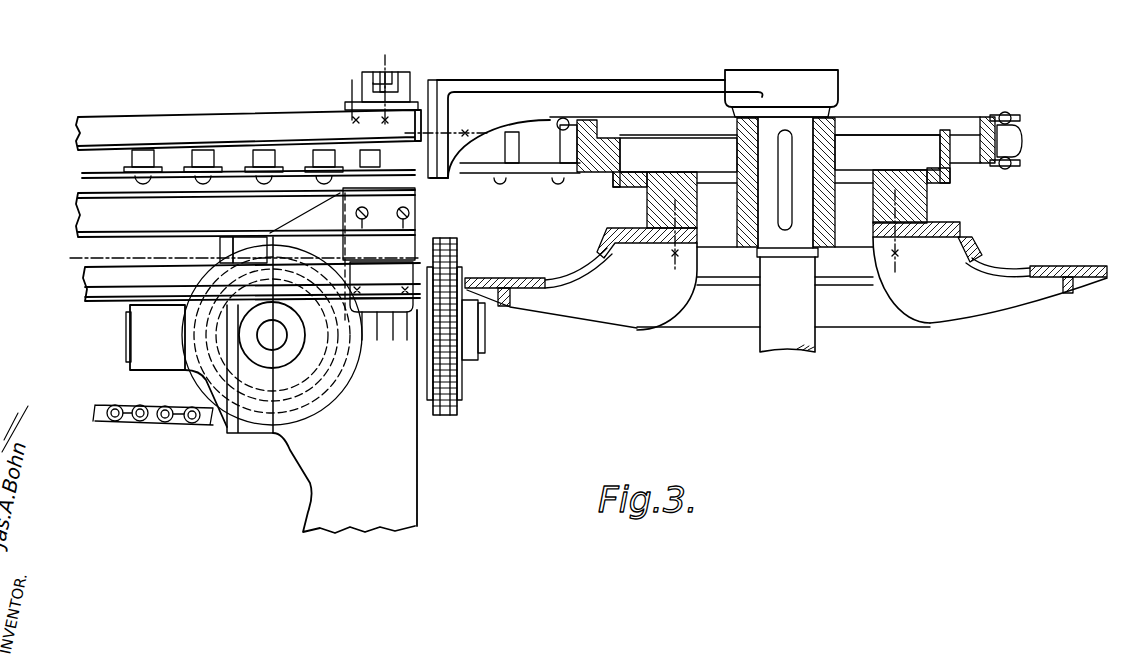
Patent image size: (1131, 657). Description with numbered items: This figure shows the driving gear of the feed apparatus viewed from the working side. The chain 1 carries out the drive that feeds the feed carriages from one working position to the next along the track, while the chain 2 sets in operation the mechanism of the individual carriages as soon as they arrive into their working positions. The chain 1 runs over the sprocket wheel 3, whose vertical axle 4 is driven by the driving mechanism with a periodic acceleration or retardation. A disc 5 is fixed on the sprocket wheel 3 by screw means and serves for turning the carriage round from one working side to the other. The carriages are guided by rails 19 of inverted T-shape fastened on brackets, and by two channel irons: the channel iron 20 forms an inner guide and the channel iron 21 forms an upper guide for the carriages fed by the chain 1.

The chain 1 is at (145, 158).
The chain 2 is at (128, 419).
The sprocket wheel 3 is at (956, 127).
The vertical axle 4 is at (806, 341).
The disc 5 is at (1022, 295).
The rails 19 is at (118, 273).
The channel iron 20 is at (170, 228).
The channel iron 21 is at (196, 125).